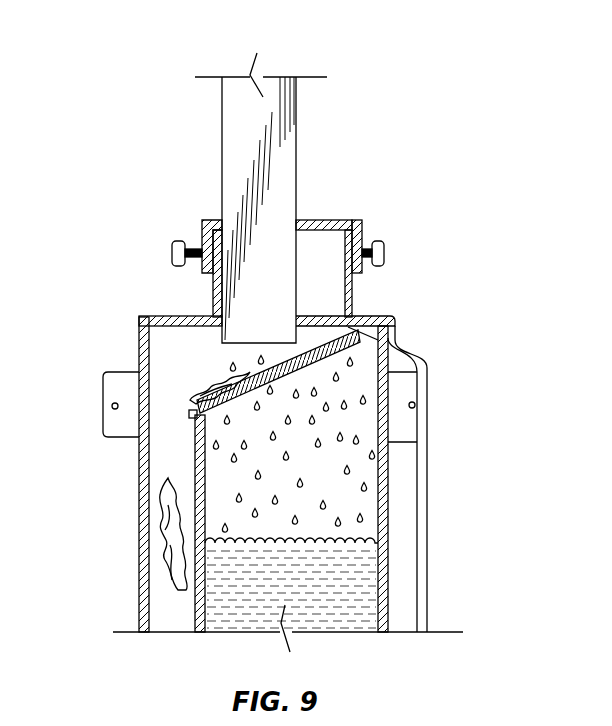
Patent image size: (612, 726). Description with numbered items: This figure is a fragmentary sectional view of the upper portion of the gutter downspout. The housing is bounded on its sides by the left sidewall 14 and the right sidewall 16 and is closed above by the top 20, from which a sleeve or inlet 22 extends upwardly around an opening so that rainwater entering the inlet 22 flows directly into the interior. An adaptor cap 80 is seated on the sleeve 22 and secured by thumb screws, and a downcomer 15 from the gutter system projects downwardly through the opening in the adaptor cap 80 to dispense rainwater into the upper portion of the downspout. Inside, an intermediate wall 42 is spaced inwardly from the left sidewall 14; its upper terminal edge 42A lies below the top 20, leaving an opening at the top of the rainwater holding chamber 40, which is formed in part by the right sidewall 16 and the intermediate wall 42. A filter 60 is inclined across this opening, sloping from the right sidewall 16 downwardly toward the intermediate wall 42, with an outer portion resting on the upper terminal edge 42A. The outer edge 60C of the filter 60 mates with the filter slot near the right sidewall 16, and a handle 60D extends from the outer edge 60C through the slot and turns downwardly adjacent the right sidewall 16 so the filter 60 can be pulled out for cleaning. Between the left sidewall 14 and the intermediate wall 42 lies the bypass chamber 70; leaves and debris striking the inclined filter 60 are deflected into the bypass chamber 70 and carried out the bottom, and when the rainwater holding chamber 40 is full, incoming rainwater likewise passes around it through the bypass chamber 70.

The left sidewall 14 is at (139, 547).
The downcomer 15 is at (277, 153).
The right sidewall 16 is at (388, 587).
The top 20 is at (187, 317).
The sleeve or inlet 22 is at (352, 300).
The rainwater holding chamber 40 is at (317, 487).
The intermediate wall 42 is at (195, 587).
The upper terminal edge 42A is at (191, 411).
The filter 60 is at (240, 363).
The outer edge 60C is at (373, 323).
The handle 60D is at (425, 570).
The bypass chamber 70 is at (173, 450).
The adaptor cap 80 is at (362, 233).